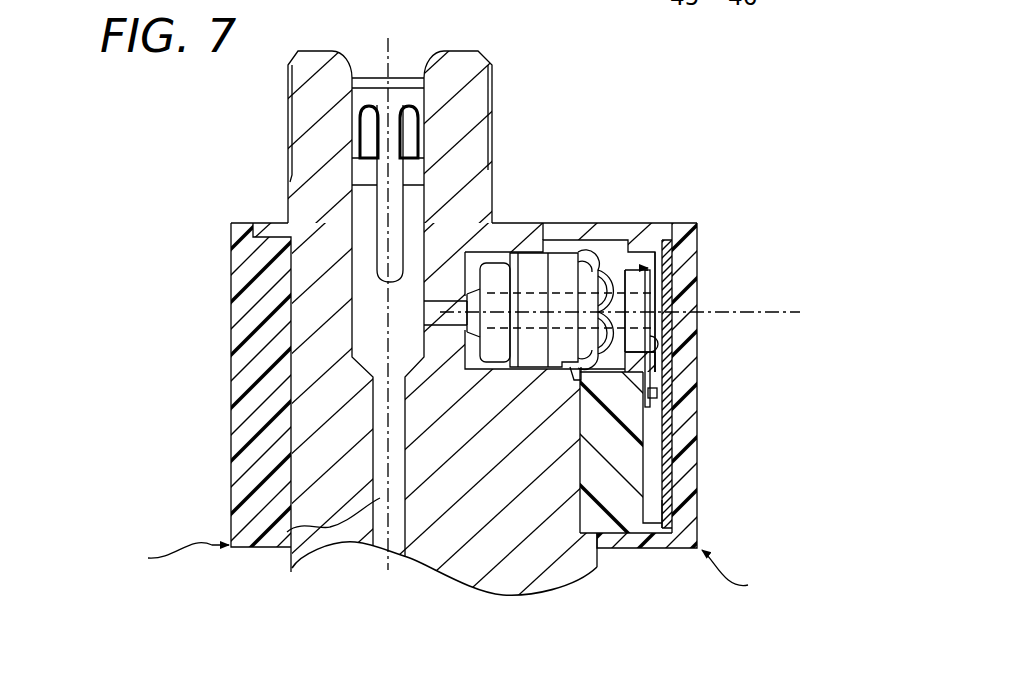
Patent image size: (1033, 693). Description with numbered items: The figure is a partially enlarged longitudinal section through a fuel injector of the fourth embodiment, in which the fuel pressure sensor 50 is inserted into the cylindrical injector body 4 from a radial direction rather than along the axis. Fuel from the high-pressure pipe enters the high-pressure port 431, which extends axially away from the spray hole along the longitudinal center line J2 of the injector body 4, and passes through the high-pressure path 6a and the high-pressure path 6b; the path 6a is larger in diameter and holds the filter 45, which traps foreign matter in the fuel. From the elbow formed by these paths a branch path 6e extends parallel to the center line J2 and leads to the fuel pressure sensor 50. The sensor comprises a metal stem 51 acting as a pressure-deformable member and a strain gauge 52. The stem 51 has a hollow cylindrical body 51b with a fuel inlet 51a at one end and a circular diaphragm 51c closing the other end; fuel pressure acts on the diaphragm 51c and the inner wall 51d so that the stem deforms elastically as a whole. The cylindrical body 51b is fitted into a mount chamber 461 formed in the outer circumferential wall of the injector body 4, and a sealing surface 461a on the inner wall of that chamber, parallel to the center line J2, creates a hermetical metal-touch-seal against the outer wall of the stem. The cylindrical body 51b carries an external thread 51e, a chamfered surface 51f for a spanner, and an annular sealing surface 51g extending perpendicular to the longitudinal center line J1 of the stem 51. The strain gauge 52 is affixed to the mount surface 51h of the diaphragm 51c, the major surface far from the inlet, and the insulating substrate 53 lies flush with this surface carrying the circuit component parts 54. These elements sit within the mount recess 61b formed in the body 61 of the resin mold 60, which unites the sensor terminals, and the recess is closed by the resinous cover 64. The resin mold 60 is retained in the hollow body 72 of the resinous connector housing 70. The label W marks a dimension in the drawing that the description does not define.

The injector body 4 is at (427, 552).
The high-pressure port 431 is at (317, 105).
The filter 45 is at (350, 213).
The longitudinal center line of the injector body J2 is at (384, 289).
The branch path 6e is at (440, 300).
The mount chamber 461 is at (523, 368).
The sealing surface 461a is at (466, 333).
The high-pressure path 6a is at (373, 308).
The high-pressure path 6b is at (287, 532).
The connector housing 70 is at (447, 572).
The fuel pressure sensor 50 is at (697, 243).
The annular sealing surface 51g is at (468, 332).
The stem 51 is at (535, 253).
The fuel inlet 51a is at (463, 235).
The hollow cylindrical body 51b is at (560, 252).
The inner wall 51d is at (586, 252).
The diaphragm 51c is at (664, 242).
The chamfered surface 51f is at (640, 268).
The external thread 51e is at (542, 370).
The strain gauge 52 is at (657, 283).
The longitudinal center line of the stem J1 is at (634, 312).
The mount surface 51h is at (652, 334).
The gap width W is at (660, 362).
The insulating substrate 53 is at (658, 392).
The circuit component parts 54 is at (668, 403).
The resinous cover 64 is at (668, 457).
The body 61 is at (628, 515).
The mount recess 61b is at (655, 508).
The resin mold 60 is at (598, 480).
The hollow body 72 is at (666, 545).